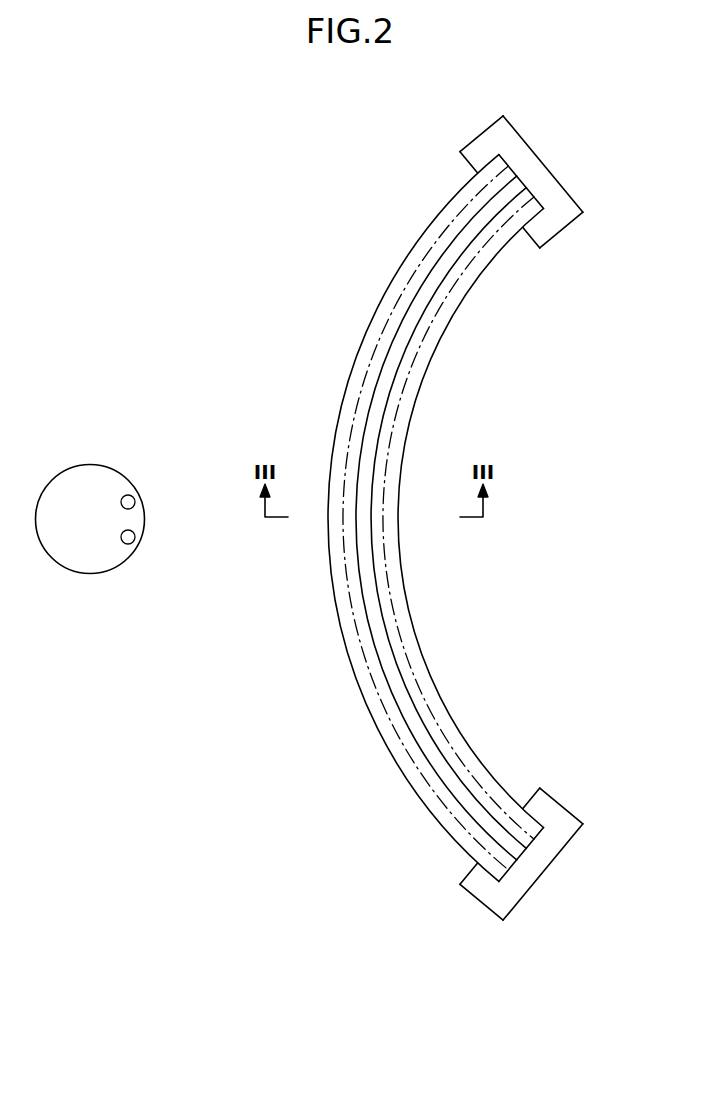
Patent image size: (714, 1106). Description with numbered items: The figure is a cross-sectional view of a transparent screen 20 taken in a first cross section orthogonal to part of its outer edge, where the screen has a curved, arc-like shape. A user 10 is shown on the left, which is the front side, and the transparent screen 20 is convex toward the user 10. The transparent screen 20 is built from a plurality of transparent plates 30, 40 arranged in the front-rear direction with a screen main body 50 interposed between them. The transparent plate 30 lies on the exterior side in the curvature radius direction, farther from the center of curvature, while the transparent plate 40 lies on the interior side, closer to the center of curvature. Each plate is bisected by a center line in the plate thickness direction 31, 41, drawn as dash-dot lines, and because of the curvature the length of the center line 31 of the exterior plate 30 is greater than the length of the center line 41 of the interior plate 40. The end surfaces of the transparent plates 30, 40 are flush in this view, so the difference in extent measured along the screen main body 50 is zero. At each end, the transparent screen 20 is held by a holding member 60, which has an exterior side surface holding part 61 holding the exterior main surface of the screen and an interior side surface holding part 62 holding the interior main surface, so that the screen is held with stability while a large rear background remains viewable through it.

The user 10 is at (88, 475).
The transparent screen 20 is at (412, 518).
The transparent plate 30 is at (399, 518).
The center line in the plate thickness direction 31 is at (352, 426).
The transparent plate 40 is at (463, 518).
The center line in the plate thickness direction 41 is at (397, 426).
The screen main body 50 is at (363, 517).
The holding member 60 is at (538, 158).
The exterior side surface holding part 61 is at (473, 151).
The interior side surface holding part 62 is at (547, 222).